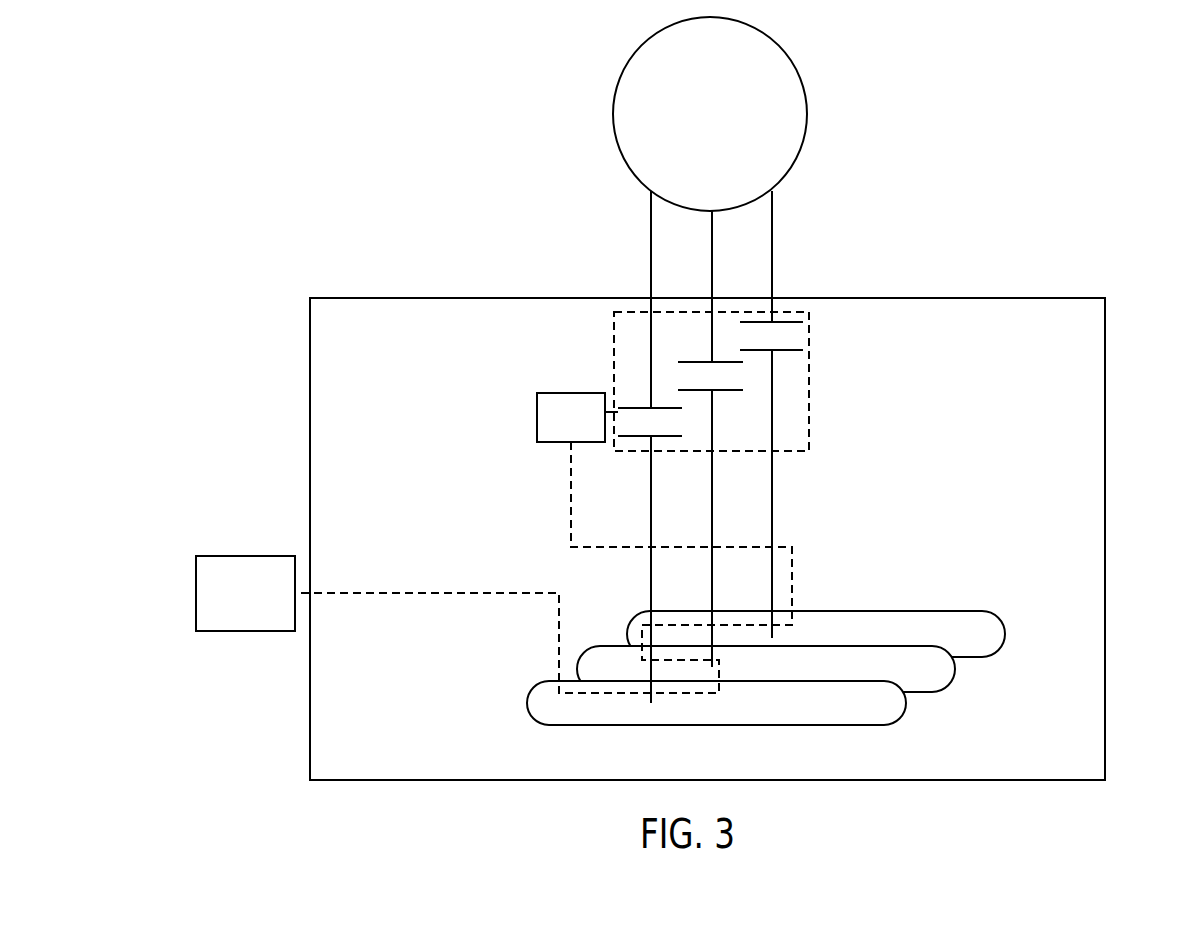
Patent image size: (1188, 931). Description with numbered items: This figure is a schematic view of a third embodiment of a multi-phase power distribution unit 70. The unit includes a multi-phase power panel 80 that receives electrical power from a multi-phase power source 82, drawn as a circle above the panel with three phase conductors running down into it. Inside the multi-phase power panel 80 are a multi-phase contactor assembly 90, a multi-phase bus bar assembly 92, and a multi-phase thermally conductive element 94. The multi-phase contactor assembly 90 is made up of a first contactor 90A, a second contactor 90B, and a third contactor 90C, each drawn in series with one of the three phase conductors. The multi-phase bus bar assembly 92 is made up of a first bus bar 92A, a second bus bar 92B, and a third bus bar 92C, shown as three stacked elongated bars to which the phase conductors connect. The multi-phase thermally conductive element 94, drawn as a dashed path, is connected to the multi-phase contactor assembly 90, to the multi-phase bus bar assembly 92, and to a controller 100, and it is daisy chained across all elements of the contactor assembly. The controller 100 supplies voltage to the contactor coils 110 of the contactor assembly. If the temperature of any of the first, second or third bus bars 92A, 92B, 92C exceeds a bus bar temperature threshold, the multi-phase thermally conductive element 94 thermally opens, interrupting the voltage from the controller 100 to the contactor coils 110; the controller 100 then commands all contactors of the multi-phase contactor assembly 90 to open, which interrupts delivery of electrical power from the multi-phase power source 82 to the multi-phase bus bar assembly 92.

The multi-phase power distribution unit 70 is at (390, 156).
The multi-phase power panel 80 is at (1110, 328).
The multi-phase power source 82 is at (808, 113).
The multi-phase contactor assembly 90 is at (732, 381).
The first contactor 90A is at (636, 407).
The second contactor 90B is at (727, 390).
The third contactor 90C is at (790, 352).
The multi-phase bus bar assembly 92 is at (796, 630).
The first bus bar 92A is at (904, 702).
The second bus bar 92B is at (953, 668).
The third bus bar 92C is at (1003, 634).
The multi-phase thermally conductive element 94 is at (571, 480).
The controller 100 is at (246, 556).
The contactor coils 110 is at (537, 418).